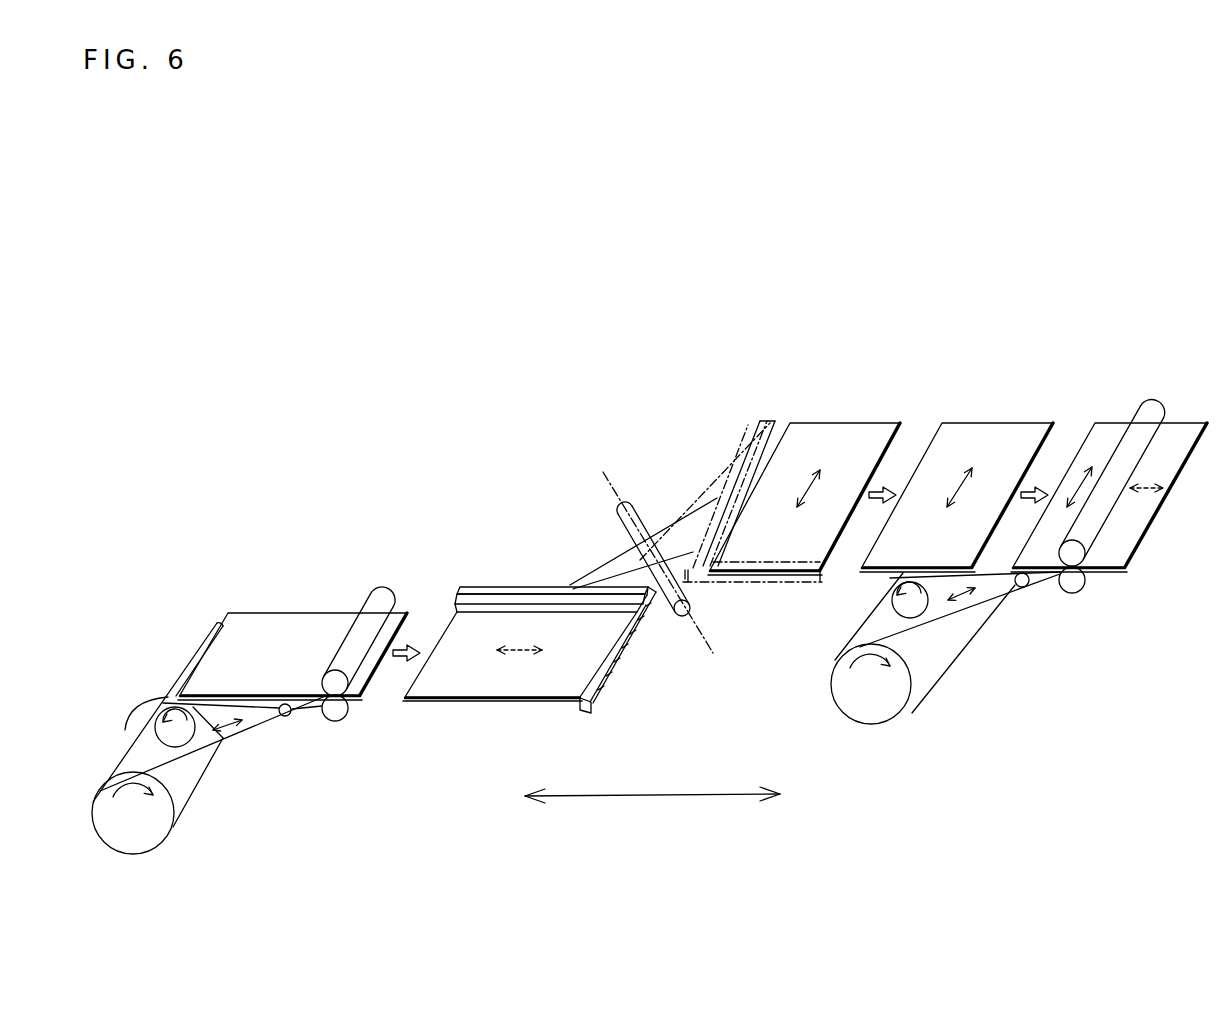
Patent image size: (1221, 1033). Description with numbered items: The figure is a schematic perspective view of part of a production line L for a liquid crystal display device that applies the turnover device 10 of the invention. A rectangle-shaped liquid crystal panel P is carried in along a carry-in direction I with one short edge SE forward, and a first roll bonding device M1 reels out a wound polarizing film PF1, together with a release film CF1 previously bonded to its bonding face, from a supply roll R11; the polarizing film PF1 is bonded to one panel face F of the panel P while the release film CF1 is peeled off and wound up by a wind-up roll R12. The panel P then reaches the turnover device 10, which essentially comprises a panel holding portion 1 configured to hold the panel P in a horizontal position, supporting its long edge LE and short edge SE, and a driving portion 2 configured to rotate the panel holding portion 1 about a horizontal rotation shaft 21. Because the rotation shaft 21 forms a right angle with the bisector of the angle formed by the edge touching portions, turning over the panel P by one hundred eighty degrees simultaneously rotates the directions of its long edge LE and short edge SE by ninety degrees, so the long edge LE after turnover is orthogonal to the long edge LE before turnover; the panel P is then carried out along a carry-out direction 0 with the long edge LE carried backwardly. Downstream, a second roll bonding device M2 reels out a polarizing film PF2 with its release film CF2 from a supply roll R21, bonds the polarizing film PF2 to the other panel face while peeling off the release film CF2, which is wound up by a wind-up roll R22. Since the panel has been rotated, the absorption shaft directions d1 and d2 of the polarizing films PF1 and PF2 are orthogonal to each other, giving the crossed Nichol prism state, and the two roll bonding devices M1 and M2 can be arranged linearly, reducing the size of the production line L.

The turnover device 10 is at (507, 480).
The panel holding portion 1 is at (480, 577).
The driving portion 2 is at (610, 530).
The rotation shaft 21 is at (637, 513).
The liquid crystal panel P is at (443, 622).
The panel face F is at (305, 627).
The long edge LE is at (545, 611).
The short edge SE is at (622, 668).
The polarizing film PF1 is at (502, 705).
The polarizing film PF2 is at (1003, 597).
The release film CF1 is at (196, 660).
The release film CF2 is at (887, 577).
The supply roll R11 is at (147, 837).
The wind-up roll R12 is at (167, 740).
The supply roll R21 is at (883, 705).
The wind-up roll R22 is at (900, 607).
The roll bonding device M1 is at (243, 813).
The roll bonding device M2 is at (982, 680).
The absorption shaft direction d1 is at (232, 762).
The absorption shaft direction d2 is at (962, 601).
The rotation axis A is at (662, 572).
The production line L is at (652, 808).
The carry-in direction I is at (406, 665).
The carry-out direction 0 is at (957, 507).